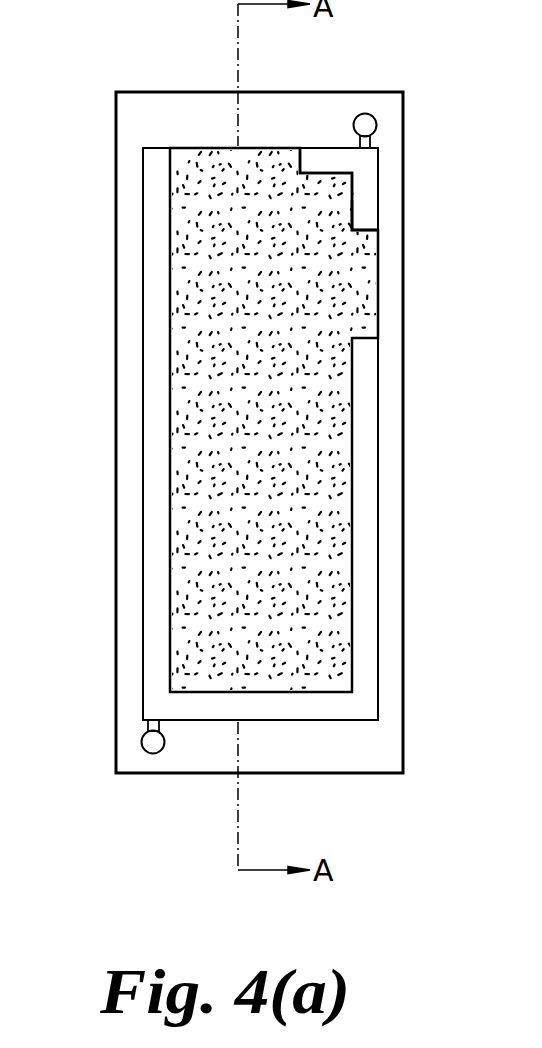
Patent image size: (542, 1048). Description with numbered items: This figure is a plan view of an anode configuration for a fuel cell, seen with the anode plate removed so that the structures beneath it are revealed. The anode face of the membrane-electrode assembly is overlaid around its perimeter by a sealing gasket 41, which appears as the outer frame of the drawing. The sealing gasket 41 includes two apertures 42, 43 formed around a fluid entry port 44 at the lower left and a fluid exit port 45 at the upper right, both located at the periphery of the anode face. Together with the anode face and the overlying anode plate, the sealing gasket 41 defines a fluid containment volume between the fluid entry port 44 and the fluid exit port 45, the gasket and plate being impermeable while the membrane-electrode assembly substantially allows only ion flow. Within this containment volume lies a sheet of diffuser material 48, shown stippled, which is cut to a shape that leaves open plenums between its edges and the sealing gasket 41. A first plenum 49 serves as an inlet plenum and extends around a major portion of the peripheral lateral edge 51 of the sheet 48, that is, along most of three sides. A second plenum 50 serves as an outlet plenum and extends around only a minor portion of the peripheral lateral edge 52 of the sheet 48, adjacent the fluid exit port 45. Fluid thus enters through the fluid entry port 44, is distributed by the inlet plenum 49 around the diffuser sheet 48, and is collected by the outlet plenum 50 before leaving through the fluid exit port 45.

The sealing gasket 41 is at (137, 301).
The aperture 42 is at (157, 752).
The aperture 43 is at (365, 124).
The fluid entry port 44 is at (150, 742).
The fluid exit port 45 is at (366, 124).
The sheet of diffuser material 48 is at (320, 405).
The first plenum 49 is at (153, 607).
The second plenum 50 is at (367, 185).
The peripheral lateral edge 51 is at (168, 503).
The peripheral lateral edge 52 is at (352, 212).